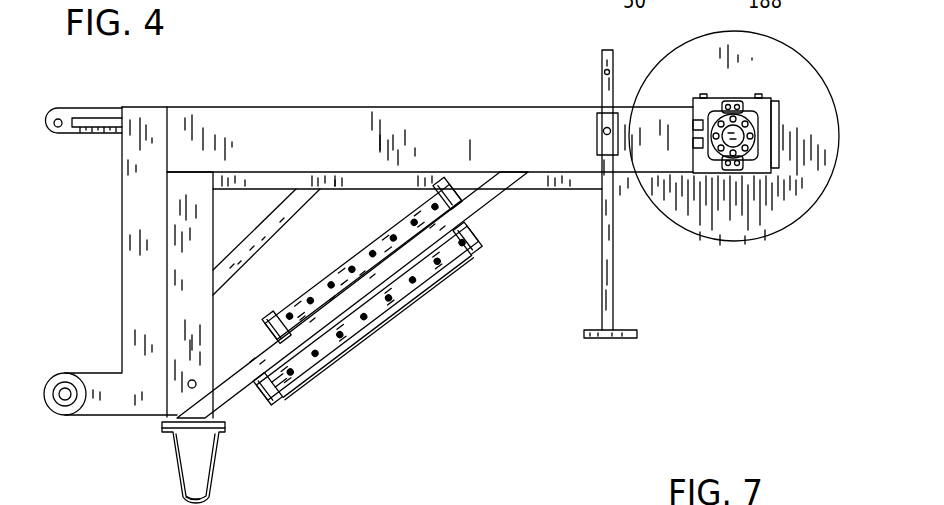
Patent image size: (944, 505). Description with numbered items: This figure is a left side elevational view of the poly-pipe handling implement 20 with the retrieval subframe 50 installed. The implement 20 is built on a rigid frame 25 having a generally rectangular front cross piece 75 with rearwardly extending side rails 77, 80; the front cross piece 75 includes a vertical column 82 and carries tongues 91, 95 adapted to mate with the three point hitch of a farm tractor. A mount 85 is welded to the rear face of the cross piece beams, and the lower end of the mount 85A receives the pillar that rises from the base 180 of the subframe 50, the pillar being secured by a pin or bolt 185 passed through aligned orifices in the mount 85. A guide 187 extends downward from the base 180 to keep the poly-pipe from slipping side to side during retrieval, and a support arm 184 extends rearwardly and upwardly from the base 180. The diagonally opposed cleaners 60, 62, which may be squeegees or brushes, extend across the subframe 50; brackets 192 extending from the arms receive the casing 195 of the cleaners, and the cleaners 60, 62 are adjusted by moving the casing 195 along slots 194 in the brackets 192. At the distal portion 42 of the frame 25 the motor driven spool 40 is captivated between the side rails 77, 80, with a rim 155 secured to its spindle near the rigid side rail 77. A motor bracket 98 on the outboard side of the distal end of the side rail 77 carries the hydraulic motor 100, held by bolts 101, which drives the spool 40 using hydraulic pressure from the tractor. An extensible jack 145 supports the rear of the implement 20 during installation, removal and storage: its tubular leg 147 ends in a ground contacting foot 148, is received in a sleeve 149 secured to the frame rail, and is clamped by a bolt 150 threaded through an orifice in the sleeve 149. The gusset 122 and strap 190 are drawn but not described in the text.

The poly-pipe handling implement 20 is at (266, 58).
The rigid frame 25 is at (407, 120).
The motor driven spool 40 is at (750, 262).
The distal portion 42 is at (656, 90).
The poly-pipe retrieval subframe 50 is at (253, 410).
The cleaner 60 is at (412, 310).
The cleaner 62 is at (346, 241).
The front cross piece 75 is at (106, 250).
The side rail 77 is at (366, 107).
The side rail 80 is at (342, 182).
The vertical column 82 is at (133, 200).
The mount 85 is at (187, 298).
The lower end of the mount 85A is at (178, 407).
The tongue 91 is at (72, 100).
The tongue 95 is at (67, 430).
The motor bracket 98 is at (765, 170).
The hydraulic motor 100 is at (752, 137).
The bolt 101 is at (748, 108).
The gusset 122 is at (253, 240).
The extensible jack 145 is at (580, 115).
The tubular leg 147 is at (614, 286).
The ground contacting foot 148 is at (622, 337).
The sleeve 149 is at (616, 148).
The bolt 150 is at (603, 131).
The rim 155 is at (790, 72).
The base 180 is at (220, 447).
The support arm 184 is at (452, 253).
The pin or bolt 185 is at (188, 384).
The guide 187 is at (185, 490).
The strap 190 is at (390, 327).
The bracket 192 is at (460, 193).
The slot 194 is at (287, 390).
The casing 195 is at (320, 289).